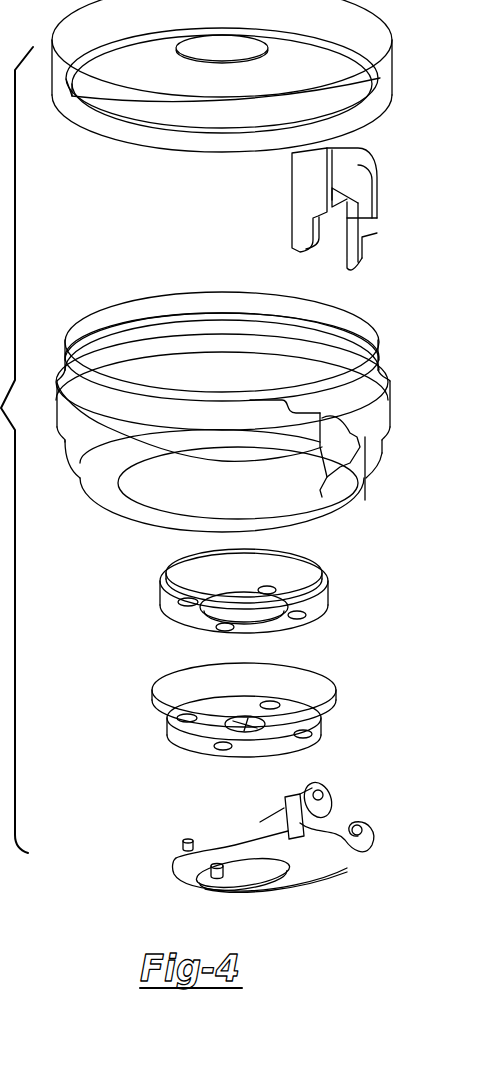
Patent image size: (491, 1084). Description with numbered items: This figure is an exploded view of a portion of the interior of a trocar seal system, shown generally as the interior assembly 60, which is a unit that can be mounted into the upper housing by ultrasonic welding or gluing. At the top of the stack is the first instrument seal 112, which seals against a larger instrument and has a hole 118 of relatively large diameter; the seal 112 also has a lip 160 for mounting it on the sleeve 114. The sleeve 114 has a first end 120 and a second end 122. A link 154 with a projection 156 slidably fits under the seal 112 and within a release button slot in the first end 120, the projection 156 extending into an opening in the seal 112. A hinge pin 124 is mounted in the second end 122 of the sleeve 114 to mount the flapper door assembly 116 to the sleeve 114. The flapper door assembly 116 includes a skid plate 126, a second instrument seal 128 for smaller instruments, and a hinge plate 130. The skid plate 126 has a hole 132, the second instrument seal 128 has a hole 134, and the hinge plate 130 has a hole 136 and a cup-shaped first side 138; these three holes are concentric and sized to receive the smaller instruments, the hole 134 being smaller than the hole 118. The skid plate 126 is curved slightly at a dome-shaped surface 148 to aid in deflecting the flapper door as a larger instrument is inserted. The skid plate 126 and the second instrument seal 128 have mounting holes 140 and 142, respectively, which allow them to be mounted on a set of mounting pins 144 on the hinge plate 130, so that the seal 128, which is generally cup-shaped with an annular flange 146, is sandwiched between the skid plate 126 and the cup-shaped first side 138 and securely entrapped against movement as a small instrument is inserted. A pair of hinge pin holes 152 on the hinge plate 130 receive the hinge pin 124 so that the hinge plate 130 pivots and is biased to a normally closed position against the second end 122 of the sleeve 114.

The interior assembly 60 is at (261, 393).
The first instrument seal 112 is at (267, 87).
The sleeve 114 is at (389, 364).
The flapper door assembly 116 is at (286, 736).
The hole 118 is at (200, 57).
The first end 120 is at (242, 393).
The second end 122 is at (105, 490).
The hinge pin 124 is at (362, 447).
The skid plate 126 is at (230, 597).
The second instrument seal 128 is at (231, 722).
The hinge plate 130 is at (258, 860).
The hole 132 is at (238, 606).
The hole 134 is at (253, 729).
The hole 136 is at (254, 872).
The cup-shaped first side 138 is at (315, 815).
The mounting holes 140 is at (224, 630).
The mounting holes 142 is at (223, 749).
The mounting pins 144 is at (188, 839).
The annular flange 146 is at (177, 707).
The curved dome-shaped surface 148 is at (258, 553).
The hinge pin holes 152 is at (320, 794).
The link 154 is at (378, 234).
The projection 156 is at (373, 201).
The lip 160 is at (88, 99).